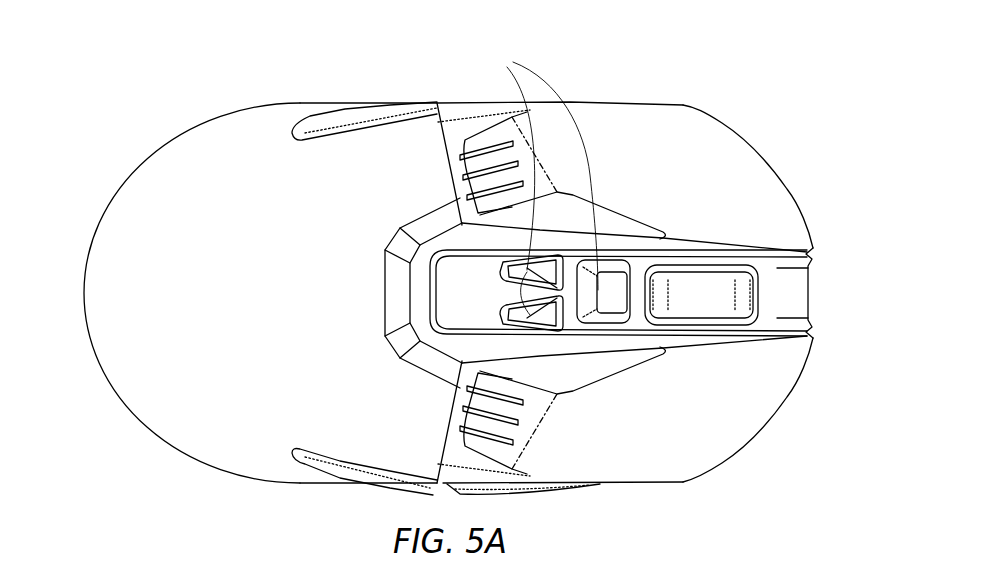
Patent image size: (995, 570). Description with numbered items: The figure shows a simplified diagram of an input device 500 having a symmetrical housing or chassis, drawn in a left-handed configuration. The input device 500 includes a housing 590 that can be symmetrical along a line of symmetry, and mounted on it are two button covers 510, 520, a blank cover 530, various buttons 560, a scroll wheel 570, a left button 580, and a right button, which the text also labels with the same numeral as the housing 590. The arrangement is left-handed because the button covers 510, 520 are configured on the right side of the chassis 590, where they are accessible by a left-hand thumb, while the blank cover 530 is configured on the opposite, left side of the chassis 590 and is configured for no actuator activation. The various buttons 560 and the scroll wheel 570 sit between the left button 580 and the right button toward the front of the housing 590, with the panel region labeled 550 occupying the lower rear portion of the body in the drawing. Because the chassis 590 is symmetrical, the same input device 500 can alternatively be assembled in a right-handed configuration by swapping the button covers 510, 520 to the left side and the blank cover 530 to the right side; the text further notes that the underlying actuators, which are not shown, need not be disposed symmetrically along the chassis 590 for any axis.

The input device 500 is at (712, 46).
The button cover 510 is at (368, 492).
The button cover 520 is at (527, 493).
The blank cover 530 is at (395, 100).
The lower button panel 550 is at (760, 383).
The buttons 560 is at (507, 67).
The scroll wheel 570 is at (718, 285).
The left button 580 is at (710, 140).
The housing 590 is at (135, 172).